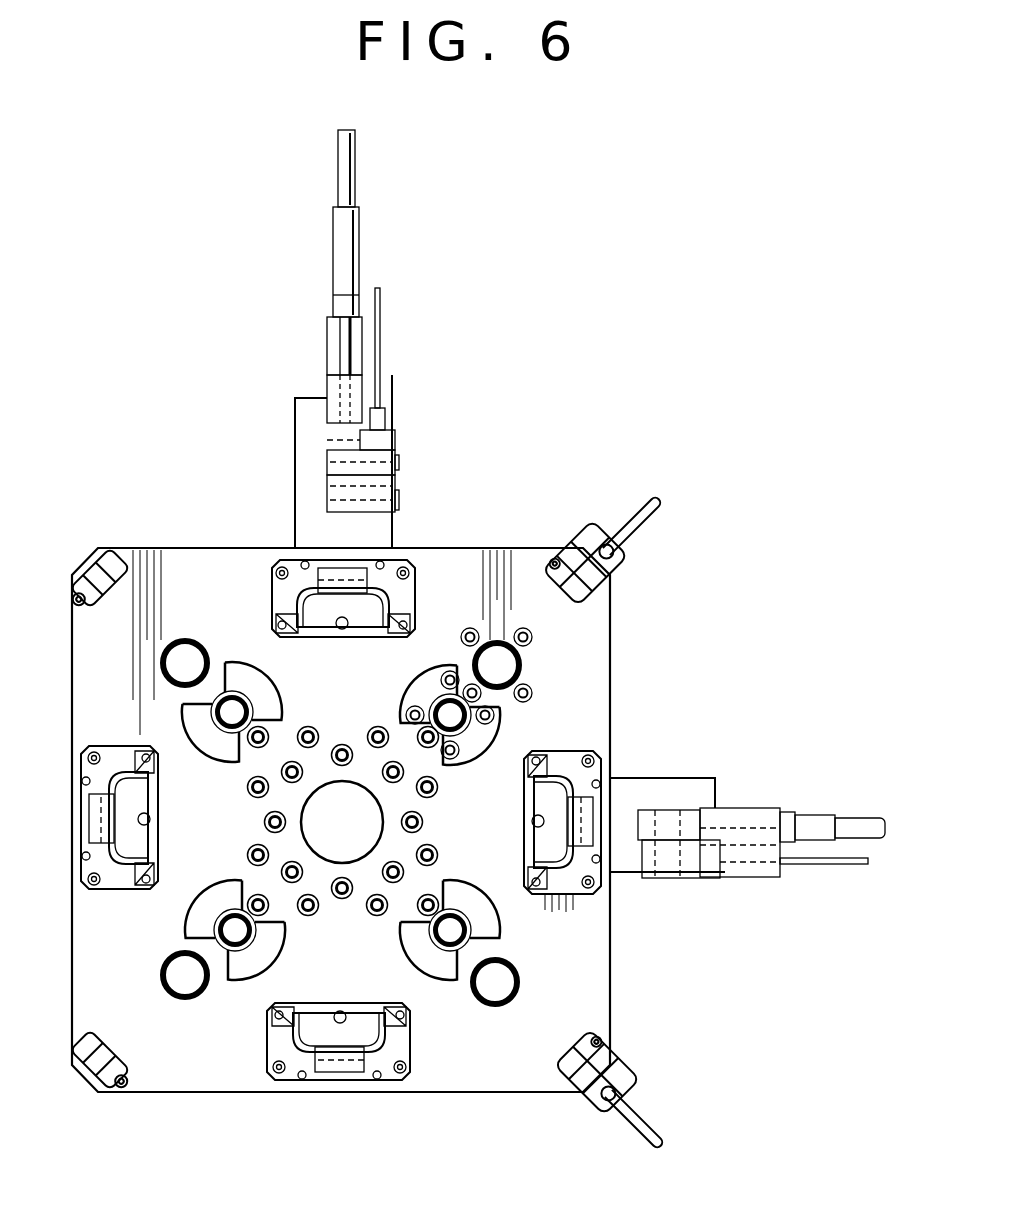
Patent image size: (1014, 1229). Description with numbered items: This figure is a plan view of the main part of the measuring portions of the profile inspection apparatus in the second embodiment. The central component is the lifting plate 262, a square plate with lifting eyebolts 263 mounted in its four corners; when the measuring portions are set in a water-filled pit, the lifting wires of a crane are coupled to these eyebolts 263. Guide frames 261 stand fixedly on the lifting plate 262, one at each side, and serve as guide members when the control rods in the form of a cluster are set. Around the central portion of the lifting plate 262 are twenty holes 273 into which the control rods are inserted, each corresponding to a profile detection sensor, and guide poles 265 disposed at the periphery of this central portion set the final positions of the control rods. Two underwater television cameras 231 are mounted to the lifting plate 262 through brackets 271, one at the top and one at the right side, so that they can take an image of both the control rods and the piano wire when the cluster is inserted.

The underwater television camera 231 is at (327, 334).
The guide frame 261 is at (380, 592).
The lifting plate 262 is at (610, 1003).
The lifting eyebolt 263 is at (88, 560).
The guide pole 265 is at (250, 712).
The bracket 271 is at (296, 464).
The hole 273 is at (254, 795).